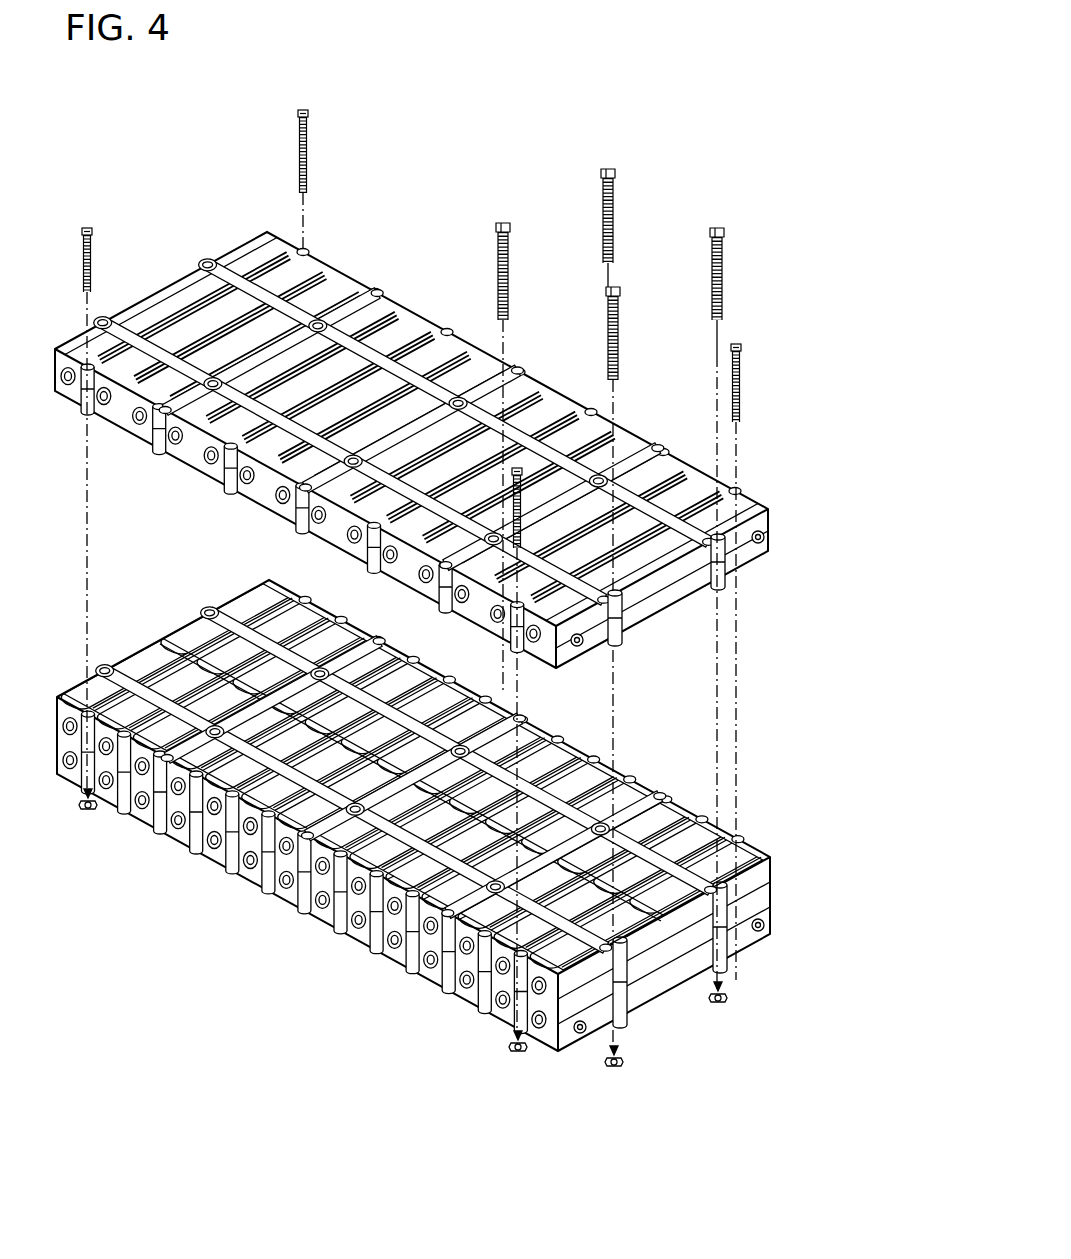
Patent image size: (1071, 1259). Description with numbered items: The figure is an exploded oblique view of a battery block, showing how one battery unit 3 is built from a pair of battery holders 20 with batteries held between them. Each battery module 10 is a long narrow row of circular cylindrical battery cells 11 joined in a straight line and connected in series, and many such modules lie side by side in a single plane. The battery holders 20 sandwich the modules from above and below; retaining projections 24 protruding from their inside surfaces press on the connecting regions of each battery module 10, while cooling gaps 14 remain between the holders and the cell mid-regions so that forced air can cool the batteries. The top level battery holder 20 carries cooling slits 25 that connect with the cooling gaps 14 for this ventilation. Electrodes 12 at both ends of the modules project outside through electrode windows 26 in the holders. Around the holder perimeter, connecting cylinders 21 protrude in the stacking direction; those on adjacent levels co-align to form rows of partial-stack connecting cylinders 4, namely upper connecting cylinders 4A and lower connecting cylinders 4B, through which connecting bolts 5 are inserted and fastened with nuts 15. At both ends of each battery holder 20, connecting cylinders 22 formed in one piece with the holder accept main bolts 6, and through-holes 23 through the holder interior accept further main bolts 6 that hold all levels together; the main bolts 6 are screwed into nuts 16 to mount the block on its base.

The battery unit 3 is at (810, 470).
The partial-stack connecting cylinders 4 is at (302, 761).
The upper connecting cylinders 4A is at (157, 462).
The lower connecting cylinders 4B is at (364, 964).
The connecting bolt 5 is at (309, 150).
The main bolt 6 is at (779, 265).
The battery module 10 is at (439, 869).
The battery cell 11 is at (600, 785).
The electrode 12 is at (417, 963).
The cooling gap 14 is at (298, 658).
The nut 15 is at (90, 812).
The nut 16 is at (614, 1070).
The battery holder 20 is at (737, 515).
The connecting cylinder 21 is at (105, 722).
The connecting cylinder 22 is at (728, 562).
The through-hole 23 is at (320, 322).
The retaining projection 24 is at (322, 668).
The cooling slit 25 is at (278, 338).
The electrode window 26 is at (492, 938).